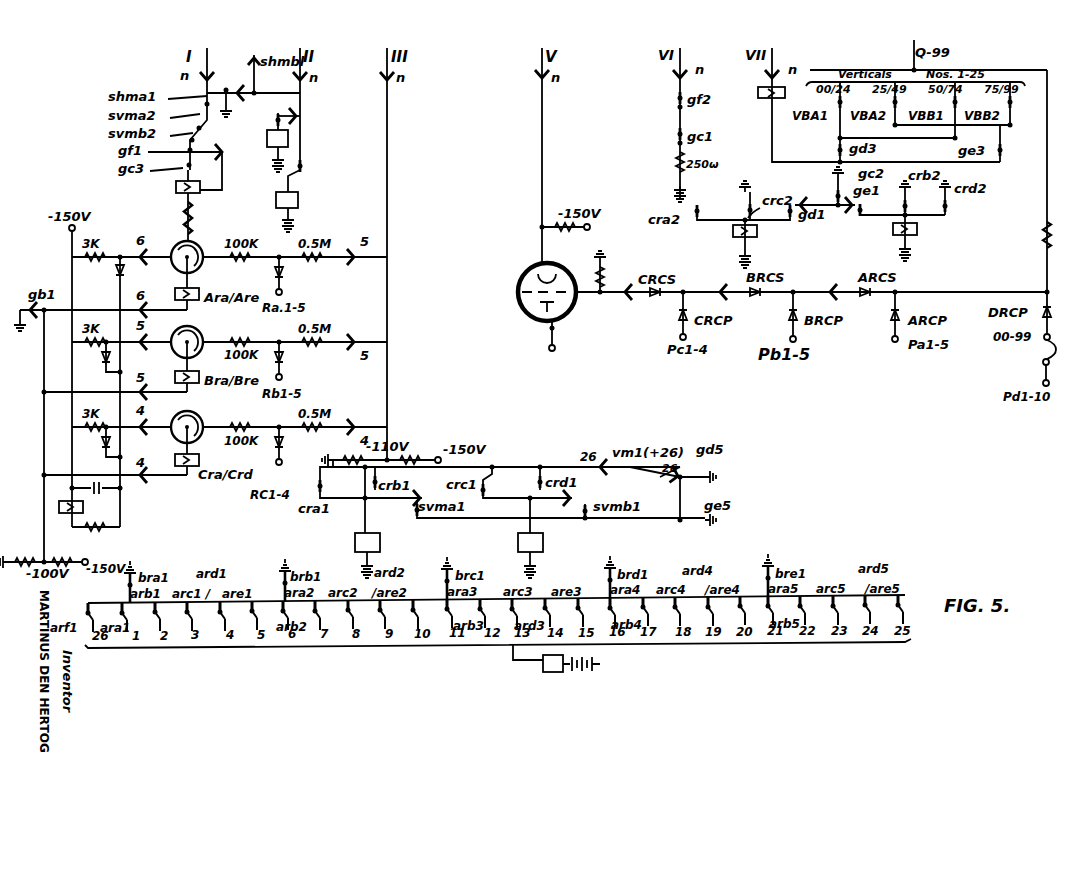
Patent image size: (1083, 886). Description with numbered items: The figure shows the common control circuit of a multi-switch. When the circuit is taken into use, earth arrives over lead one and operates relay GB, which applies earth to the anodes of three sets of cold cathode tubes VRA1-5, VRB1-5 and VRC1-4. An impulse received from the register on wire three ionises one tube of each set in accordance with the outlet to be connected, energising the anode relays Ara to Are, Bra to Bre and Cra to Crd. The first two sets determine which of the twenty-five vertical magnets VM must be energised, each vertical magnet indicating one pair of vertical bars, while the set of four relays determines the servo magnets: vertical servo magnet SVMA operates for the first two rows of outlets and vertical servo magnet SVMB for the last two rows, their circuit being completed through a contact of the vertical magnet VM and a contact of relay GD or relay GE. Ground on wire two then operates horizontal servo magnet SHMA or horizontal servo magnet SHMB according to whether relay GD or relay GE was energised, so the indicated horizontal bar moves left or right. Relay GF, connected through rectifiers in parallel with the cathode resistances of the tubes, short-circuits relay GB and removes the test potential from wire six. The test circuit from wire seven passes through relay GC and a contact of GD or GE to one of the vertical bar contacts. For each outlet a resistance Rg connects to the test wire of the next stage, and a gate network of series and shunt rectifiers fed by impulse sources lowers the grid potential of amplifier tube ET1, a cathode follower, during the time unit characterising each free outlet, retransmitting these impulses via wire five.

The relay GB is at (200, 185).
The horizontal servo magnet SHMB is at (286, 118).
The horizontal servo magnet SHMA is at (306, 172).
The cold cathode tubes VRA VRA1-5 is at (164, 240).
The cold cathode tubes VRB VRB1-5 is at (213, 334).
The cold cathode tubes VRC VRC1-4 is at (213, 420).
The relay GF is at (89, 523).
The vertical servo magnet SVMA is at (390, 555).
The vertical servo magnet SVMB is at (553, 555).
The vertical magnet VM is at (546, 658).
The amplifier tube ET1 is at (559, 310).
The relay GD is at (757, 243).
The relay GE is at (916, 237).
The relay GC is at (757, 94).
The resistance Rg is at (1026, 181).